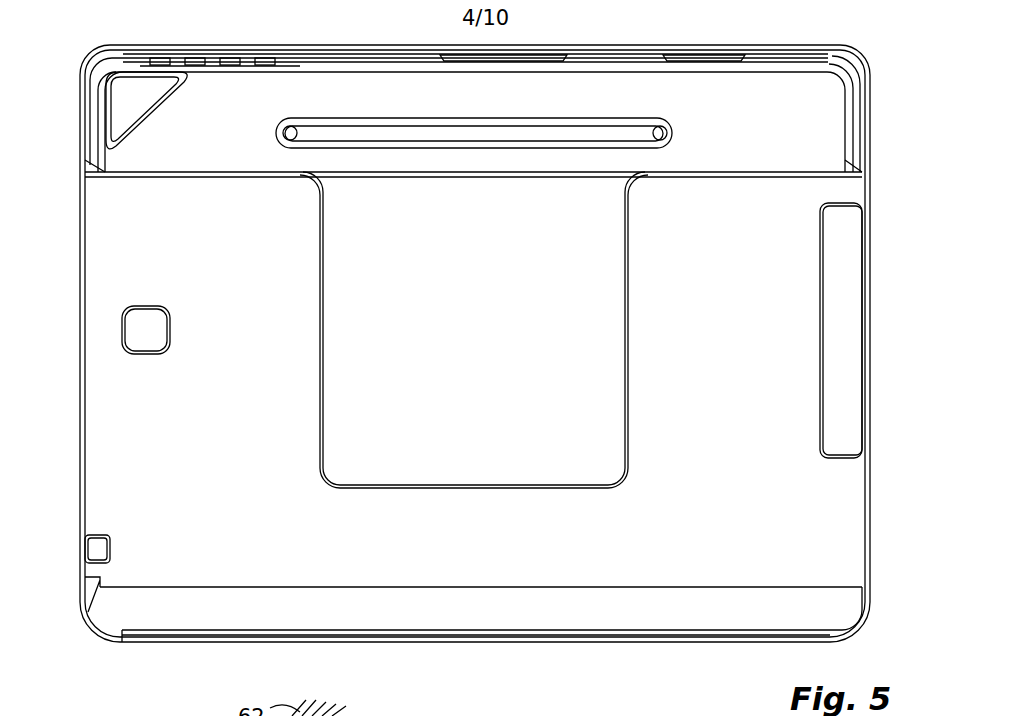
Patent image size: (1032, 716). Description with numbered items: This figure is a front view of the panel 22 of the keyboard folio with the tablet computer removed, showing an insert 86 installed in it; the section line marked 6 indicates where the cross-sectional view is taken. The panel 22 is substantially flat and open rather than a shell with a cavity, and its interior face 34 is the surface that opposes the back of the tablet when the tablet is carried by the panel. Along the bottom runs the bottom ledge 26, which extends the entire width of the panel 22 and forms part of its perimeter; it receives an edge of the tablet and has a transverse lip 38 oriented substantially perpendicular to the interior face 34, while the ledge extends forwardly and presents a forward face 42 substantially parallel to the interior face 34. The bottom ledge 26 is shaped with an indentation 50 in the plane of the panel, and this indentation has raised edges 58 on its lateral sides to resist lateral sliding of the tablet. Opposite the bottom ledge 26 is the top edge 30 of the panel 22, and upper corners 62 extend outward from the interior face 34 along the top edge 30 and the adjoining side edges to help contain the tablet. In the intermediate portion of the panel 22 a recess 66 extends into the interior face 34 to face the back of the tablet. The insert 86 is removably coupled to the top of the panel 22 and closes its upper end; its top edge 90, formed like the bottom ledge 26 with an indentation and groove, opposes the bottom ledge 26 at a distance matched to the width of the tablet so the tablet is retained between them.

The panel 22 is at (895, 545).
The bottom ledge 26 is at (725, 613).
The top edge 30 is at (265, 48).
The interior face 34 is at (785, 353).
The transverse lip 38 is at (623, 590).
The forward face 42 is at (193, 612).
The indentation 50 is at (505, 588).
The raised edges 58 is at (98, 597).
The upper corners 62 is at (95, 75).
The recess 66 is at (348, 283).
The insert 86 is at (728, 100).
The top edge of insert 90 is at (586, 60).
The section line for Fig. 6 is at (428, 37).